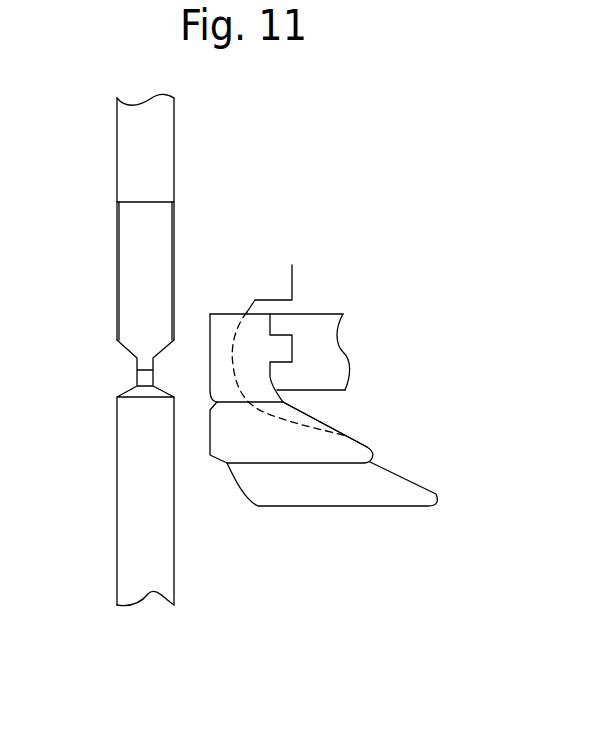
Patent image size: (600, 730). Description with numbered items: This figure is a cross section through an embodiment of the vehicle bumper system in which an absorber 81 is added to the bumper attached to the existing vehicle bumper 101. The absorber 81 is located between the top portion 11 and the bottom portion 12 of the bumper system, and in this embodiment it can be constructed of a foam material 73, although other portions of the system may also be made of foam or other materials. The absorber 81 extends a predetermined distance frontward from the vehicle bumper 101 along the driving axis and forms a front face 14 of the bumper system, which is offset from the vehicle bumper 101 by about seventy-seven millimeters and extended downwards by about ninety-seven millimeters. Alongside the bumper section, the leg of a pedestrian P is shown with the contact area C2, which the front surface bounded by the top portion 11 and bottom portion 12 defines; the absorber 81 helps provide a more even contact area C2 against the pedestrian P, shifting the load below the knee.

The top portion 11 is at (222, 328).
The bottom portion 12 is at (292, 492).
The front face 14 is at (210, 392).
The foam material 73 is at (343, 448).
The absorber 81 is at (292, 413).
The vehicle bumper 101 is at (289, 302).
The pedestrian P is at (133, 165).
The contact area C2 is at (102, 292).